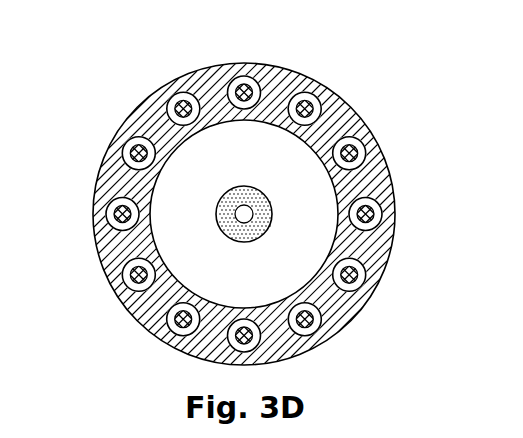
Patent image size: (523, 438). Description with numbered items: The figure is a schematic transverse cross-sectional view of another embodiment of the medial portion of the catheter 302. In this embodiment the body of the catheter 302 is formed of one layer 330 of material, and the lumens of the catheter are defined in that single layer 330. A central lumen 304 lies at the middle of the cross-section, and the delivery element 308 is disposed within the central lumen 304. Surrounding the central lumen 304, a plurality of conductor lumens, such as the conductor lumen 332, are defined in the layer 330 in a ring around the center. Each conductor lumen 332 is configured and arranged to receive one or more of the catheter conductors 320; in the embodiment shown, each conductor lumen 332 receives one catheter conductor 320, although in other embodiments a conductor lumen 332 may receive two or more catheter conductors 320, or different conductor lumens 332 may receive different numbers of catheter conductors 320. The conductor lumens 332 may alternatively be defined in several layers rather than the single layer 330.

The catheter 302 is at (258, 205).
The central lumen 304 is at (258, 140).
The delivery element 308 is at (263, 196).
The catheter conductor 320 is at (134, 148).
The layer 330 is at (205, 76).
The conductor lumen 332 is at (177, 106).